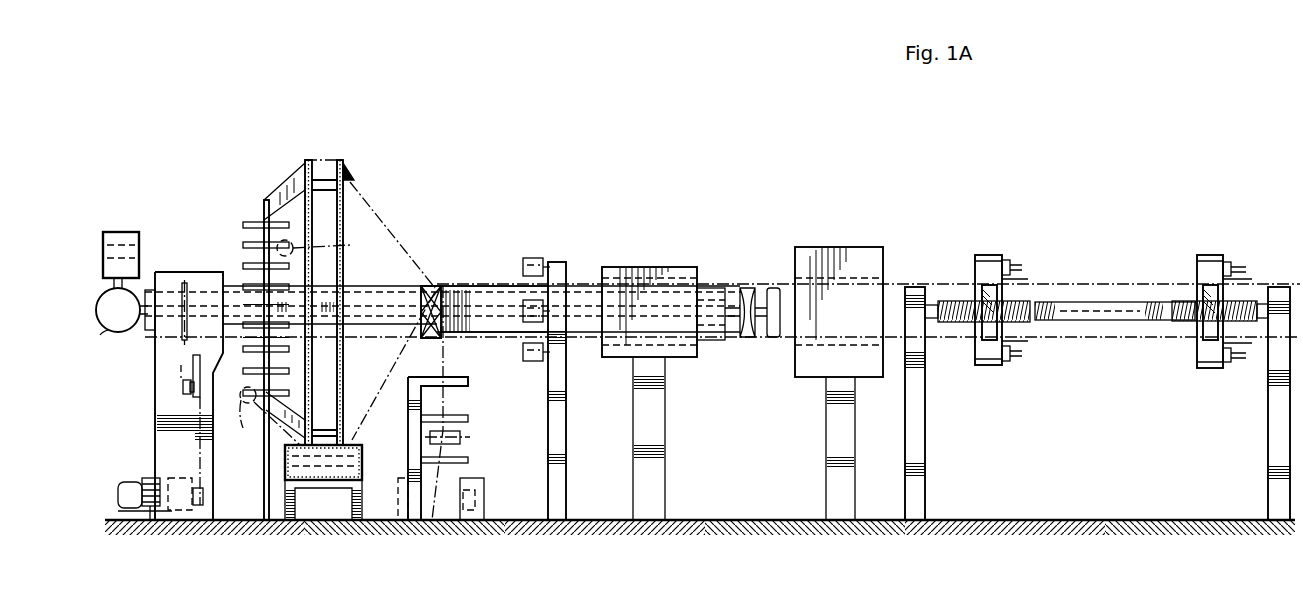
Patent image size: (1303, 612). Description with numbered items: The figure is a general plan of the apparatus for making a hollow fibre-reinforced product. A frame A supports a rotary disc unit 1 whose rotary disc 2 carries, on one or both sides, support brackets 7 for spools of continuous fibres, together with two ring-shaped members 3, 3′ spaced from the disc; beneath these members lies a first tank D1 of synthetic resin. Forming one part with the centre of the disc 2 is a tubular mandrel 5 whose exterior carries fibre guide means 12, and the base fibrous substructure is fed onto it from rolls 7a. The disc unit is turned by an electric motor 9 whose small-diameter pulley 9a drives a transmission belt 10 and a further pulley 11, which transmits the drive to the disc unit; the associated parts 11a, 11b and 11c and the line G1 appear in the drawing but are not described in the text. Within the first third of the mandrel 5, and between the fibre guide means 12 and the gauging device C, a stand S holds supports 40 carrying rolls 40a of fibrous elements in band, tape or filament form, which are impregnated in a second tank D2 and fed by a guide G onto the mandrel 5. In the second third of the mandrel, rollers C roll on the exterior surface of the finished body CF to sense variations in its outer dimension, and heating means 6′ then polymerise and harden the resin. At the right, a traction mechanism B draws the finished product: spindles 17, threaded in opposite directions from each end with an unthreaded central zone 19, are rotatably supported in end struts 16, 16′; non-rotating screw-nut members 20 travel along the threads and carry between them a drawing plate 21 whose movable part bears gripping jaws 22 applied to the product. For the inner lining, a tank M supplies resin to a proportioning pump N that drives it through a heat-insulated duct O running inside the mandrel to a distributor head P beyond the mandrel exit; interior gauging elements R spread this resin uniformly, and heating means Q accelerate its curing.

The rotary disc unit 1 is at (314, 138).
The rotary disc 2 is at (262, 212).
The ring-shaped member 3 is at (303, 180).
The ring-shaped member 3′ is at (346, 178).
The tubular mandrel 5 is at (378, 285).
The heating means 6′ is at (678, 270).
The support bracket 7 is at (243, 265).
The roll 7a is at (299, 339).
The electric motor 9 is at (128, 485).
The small-diameter pulley 9a is at (205, 500).
The transmission belt 10 is at (196, 460).
The pulley 11 is at (190, 393).
The gear 11a is at (185, 377).
The gear 11b is at (182, 356).
The gear 11c is at (185, 285).
The fibre guide means 12 is at (430, 328).
The end strut 16 is at (925, 458).
The end strut 16′ is at (1272, 460).
The spindle 17 is at (1132, 300).
The non-threaded zone 19 is at (1085, 310).
The movable member 20 is at (984, 318).
The drawing plate 21 is at (992, 256).
The gripping jaw 22 is at (1012, 267).
The support 40 is at (465, 418).
The roll 40a is at (465, 448).
The frame A is at (160, 440).
The traction mechanism B is at (1128, 245).
The gauging device C is at (522, 310).
The finished body CF is at (478, 286).
The first tank D1 is at (285, 470).
The second tank D2 is at (480, 495).
The guide G is at (462, 378).
The guide line G1 is at (437, 522).
The tank M is at (122, 245).
The proportioning pump N is at (105, 332).
The heat-insulated duct O is at (146, 332).
The distributor head P is at (745, 290).
The heating means Q is at (818, 256).
The interior gauging element R is at (773, 290).
The stand S is at (410, 455).